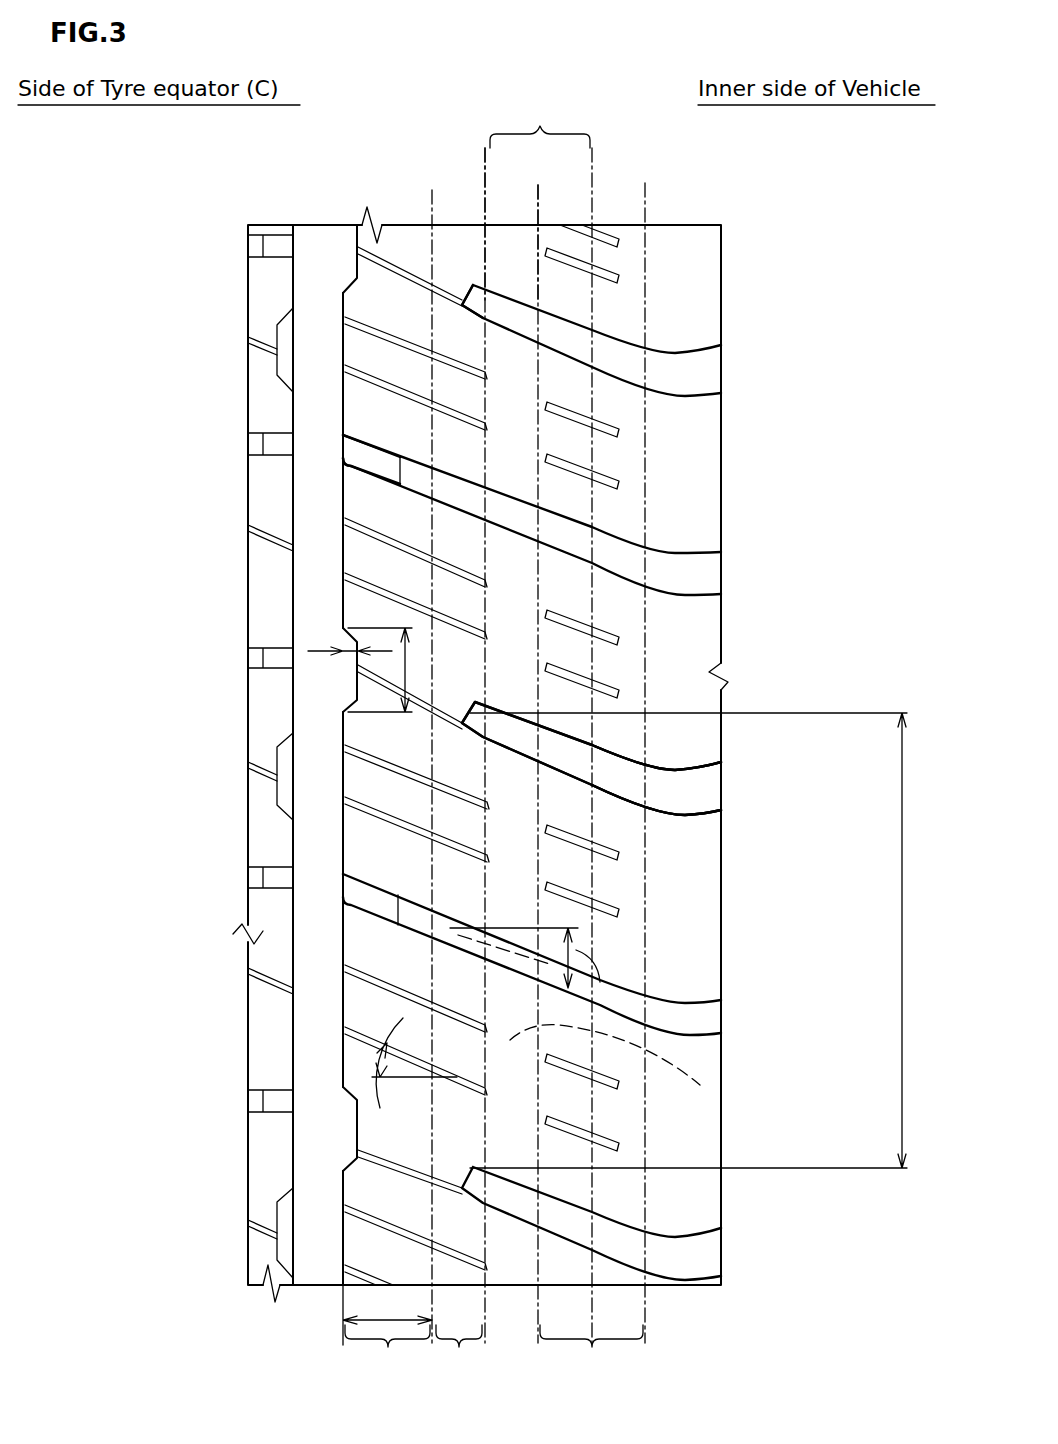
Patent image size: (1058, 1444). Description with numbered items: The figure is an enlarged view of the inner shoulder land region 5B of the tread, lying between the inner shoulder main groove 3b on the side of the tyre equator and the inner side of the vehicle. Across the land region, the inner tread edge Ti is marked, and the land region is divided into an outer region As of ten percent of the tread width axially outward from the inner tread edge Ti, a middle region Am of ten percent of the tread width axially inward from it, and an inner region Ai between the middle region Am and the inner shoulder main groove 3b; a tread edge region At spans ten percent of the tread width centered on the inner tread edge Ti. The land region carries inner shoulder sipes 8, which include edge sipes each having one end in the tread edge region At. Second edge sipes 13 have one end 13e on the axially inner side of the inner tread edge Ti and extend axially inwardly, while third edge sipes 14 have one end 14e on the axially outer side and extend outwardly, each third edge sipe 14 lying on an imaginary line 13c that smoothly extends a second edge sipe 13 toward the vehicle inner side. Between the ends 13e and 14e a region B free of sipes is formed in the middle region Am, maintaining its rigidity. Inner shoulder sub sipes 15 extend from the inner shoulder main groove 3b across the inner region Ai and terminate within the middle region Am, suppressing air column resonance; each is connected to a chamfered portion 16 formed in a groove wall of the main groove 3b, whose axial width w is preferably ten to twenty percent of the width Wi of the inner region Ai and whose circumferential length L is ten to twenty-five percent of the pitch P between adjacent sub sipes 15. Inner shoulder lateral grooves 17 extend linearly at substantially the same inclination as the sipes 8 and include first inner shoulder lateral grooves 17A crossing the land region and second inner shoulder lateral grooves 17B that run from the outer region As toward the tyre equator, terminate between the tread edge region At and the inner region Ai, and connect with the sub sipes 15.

The inner shoulder main groove 3b is at (324, 241).
The inner shoulder land region 5B is at (409, 237).
The inner shoulder sipes 8 is at (565, 615).
The second edge sipes 13 is at (395, 390).
The one end of second edge sipe 13e is at (485, 425).
The imaginary line 13c is at (700, 1085).
The third edge sipes 14 is at (560, 410).
The one end of third edge sipe 14e is at (535, 372).
The inner shoulder sub sipes 15 is at (465, 707).
The chamfered portions 16 is at (355, 678).
The inner shoulder lateral grooves 17 is at (820, 845).
The first inner shoulder lateral grooves 17A is at (578, 950).
The second inner shoulder lateral grooves 17B is at (613, 778).
The width of chamfered portion w is at (345, 650).
The length of chamfered portion L is at (348, 706).
The pitch P is at (697, 940).
The tread edge region At is at (540, 120).
The region B is at (515, 254).
The inner tread edge Ti is at (540, 200).
The width of inner region Wi is at (387, 1318).
The inner region Ai is at (387, 1351).
The middle region Am is at (472, 1351).
The outer region As is at (591, 1351).